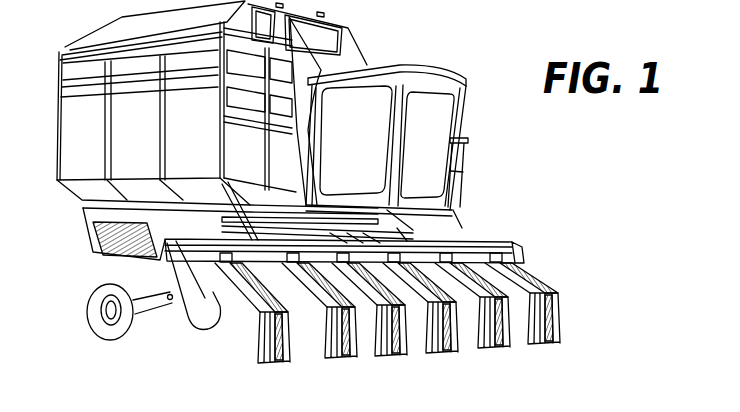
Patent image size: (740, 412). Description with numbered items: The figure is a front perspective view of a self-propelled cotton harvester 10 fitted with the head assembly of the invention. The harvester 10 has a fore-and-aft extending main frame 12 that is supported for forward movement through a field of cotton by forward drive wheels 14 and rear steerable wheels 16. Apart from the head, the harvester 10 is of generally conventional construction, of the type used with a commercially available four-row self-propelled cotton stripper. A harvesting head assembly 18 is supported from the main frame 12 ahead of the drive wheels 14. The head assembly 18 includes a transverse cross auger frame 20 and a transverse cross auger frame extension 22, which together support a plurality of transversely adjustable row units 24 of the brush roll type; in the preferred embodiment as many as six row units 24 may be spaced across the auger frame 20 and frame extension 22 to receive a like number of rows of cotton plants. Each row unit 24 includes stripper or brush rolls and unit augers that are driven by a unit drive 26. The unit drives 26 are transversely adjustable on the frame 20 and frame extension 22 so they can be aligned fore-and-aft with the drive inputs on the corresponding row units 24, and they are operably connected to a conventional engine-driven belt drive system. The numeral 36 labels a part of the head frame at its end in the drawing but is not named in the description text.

The self-propelled cotton harvester 10 is at (425, 27).
The main frame 12 is at (82, 207).
The forward drive wheels 14 is at (258, 358).
The rear steerable wheels 16 is at (178, 338).
The harvesting head assembly 18 is at (581, 267).
The transverse cross auger frame 20 is at (523, 227).
The transverse cross auger frame extension 22 is at (195, 222).
The row units 24 is at (298, 348).
The unit drive 26 is at (340, 252).
The frame end member 36 is at (516, 251).